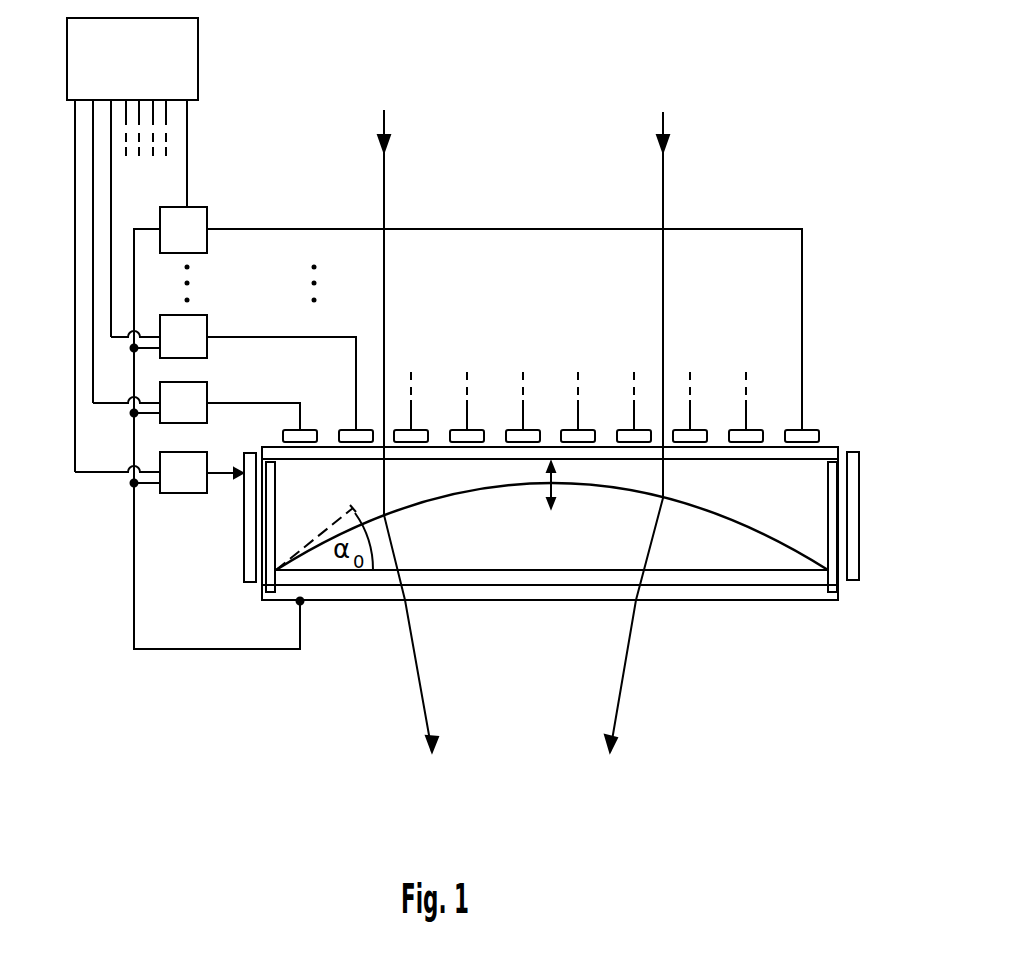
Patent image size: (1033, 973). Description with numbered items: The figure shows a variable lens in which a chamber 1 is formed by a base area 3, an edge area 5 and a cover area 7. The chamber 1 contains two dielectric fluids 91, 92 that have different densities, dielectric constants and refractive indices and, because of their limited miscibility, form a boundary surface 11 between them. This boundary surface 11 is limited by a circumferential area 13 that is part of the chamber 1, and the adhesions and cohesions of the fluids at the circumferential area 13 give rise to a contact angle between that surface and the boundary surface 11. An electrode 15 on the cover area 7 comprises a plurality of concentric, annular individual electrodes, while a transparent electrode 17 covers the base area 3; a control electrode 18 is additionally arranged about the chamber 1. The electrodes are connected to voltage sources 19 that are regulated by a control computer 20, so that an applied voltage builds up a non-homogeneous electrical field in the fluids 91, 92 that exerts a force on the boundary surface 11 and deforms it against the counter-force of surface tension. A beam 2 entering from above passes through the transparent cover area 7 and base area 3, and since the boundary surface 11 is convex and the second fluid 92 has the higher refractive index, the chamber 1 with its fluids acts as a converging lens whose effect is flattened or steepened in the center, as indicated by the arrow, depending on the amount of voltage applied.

The chamber 1 is at (332, 620).
The beam 2 is at (666, 188).
The base area 3 is at (698, 578).
The edge area 5 is at (833, 574).
The cover area 7 is at (834, 446).
The first dielectric fluid 91 is at (319, 503).
The second dielectric fluid 92 is at (458, 541).
The boundary surface 11 is at (758, 535).
The circumferential area 13 is at (830, 568).
The electrode 15 is at (742, 428).
The electrode 17 is at (376, 598).
The control electrode 18 is at (250, 531).
The voltage sources 19 is at (172, 245).
The control computer 20 is at (118, 71).